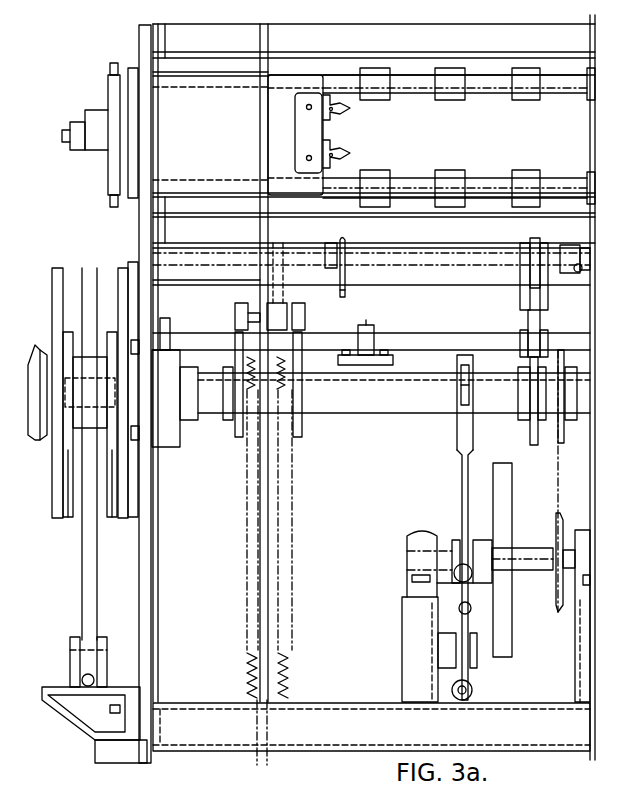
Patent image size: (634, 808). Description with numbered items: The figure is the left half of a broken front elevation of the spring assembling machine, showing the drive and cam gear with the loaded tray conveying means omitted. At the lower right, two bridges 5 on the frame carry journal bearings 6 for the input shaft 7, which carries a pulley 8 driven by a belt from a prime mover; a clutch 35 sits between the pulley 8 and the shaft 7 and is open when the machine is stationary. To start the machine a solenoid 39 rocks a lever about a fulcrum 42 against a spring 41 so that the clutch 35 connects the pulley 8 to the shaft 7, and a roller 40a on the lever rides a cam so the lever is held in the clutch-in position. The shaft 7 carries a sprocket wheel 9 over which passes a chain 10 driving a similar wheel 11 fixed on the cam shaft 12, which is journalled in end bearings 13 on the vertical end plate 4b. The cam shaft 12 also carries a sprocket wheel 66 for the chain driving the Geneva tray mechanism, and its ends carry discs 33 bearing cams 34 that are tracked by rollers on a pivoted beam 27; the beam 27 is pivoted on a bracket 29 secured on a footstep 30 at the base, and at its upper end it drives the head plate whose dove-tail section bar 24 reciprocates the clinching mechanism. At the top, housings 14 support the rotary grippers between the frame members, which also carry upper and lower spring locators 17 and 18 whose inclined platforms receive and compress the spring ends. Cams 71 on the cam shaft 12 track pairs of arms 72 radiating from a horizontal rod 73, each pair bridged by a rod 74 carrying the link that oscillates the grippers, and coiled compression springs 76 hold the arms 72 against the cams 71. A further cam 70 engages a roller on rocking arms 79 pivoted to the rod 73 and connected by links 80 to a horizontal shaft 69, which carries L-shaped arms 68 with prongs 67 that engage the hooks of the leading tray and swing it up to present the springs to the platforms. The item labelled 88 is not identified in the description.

The vertical end plate 4b is at (146, 562).
The horizontal shaft 69 is at (205, 258).
The horizontal rod 73 is at (418, 342).
The housing 14 is at (295, 135).
The sprocket wheel 9 is at (345, 152).
The upper spring locator 17 is at (522, 98).
The lower spring locator 18 is at (522, 174).
The dove-tail section bar 24 is at (115, 118).
The beam 27 is at (82, 236).
The disc 33 is at (75, 270).
The cam 34 is at (110, 500).
The sprocket wheel 66 is at (34, 408).
The end bearing 13 is at (175, 430).
The cam shaft 12 is at (394, 393).
The cam 71 is at (240, 436).
The arm 72 is at (234, 315).
The rod 74 is at (270, 315).
The coiled compression spring 76 is at (270, 516).
The collar 88 is at (329, 245).
The prong 67 is at (346, 240).
The L-shaped arm 68 is at (344, 296).
The link 80 is at (520, 280).
The rocking arm 79 is at (520, 333).
The cam 70 is at (532, 422).
The sprocket wheel 11 is at (564, 422).
The chain 10 is at (558, 470).
The roller 40a is at (470, 395).
The spring 41 is at (461, 492).
The clutch 35 is at (482, 540).
The journal bearing 6 is at (415, 533).
The bridge 5 is at (410, 657).
The fulcrum 42 is at (445, 648).
The solenoid 39 is at (474, 684).
The pulley 8 is at (505, 617).
The input shaft 7 is at (536, 566).
The bracket 29 is at (103, 642).
The footstep 30 is at (94, 725).